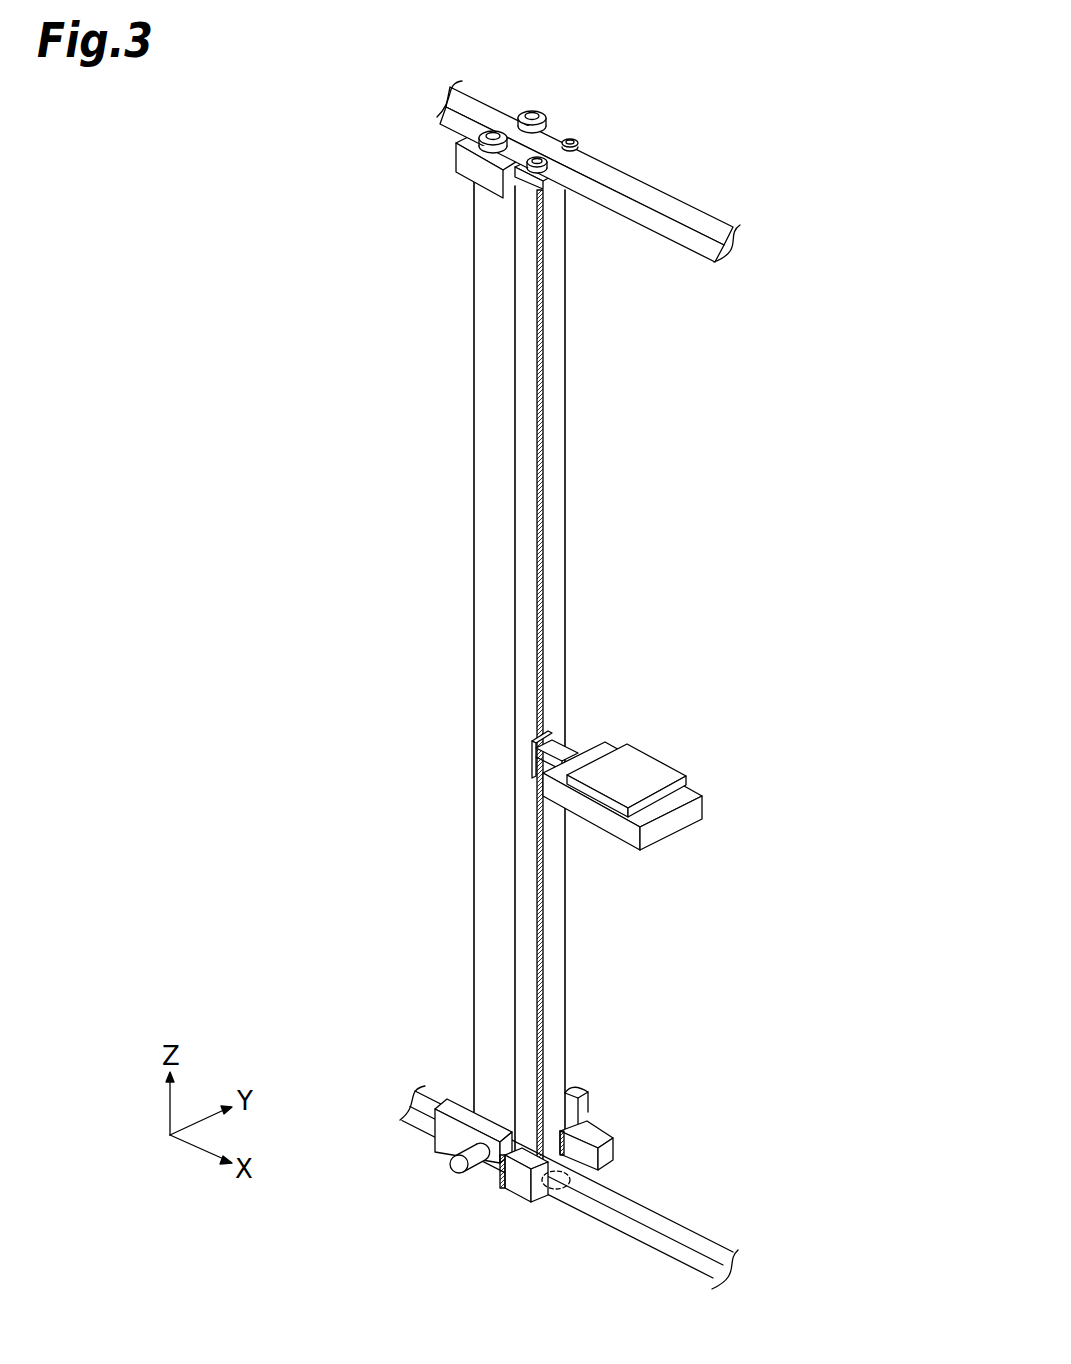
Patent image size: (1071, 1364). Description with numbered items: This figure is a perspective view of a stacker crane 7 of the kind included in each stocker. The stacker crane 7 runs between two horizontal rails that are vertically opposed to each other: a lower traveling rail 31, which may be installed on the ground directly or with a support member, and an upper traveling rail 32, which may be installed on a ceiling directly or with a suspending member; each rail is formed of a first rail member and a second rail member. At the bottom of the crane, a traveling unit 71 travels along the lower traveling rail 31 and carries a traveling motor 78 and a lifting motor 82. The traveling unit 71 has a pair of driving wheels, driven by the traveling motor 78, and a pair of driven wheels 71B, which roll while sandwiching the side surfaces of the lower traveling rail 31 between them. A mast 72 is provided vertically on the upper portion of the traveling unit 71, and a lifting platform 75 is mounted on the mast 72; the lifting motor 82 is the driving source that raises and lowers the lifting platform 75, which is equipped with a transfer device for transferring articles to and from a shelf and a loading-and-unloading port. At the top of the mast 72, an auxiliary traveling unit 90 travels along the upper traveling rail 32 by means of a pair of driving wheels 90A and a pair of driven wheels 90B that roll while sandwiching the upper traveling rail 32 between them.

The stacker crane 7 is at (447, 455).
The lower traveling rail 31 is at (690, 1231).
The upper traveling rail 32 is at (684, 246).
The traveling unit 71 is at (627, 1123).
The driven wheels 71B is at (588, 1191).
The mast 72 is at (566, 559).
The lifting platform 75 is at (703, 769).
The traveling motor 78 is at (455, 1174).
The lifting motor 82 is at (586, 1091).
The auxiliary traveling unit 90 is at (447, 165).
The driving wheels 90A is at (494, 128).
The driven wheels 90B is at (588, 146).